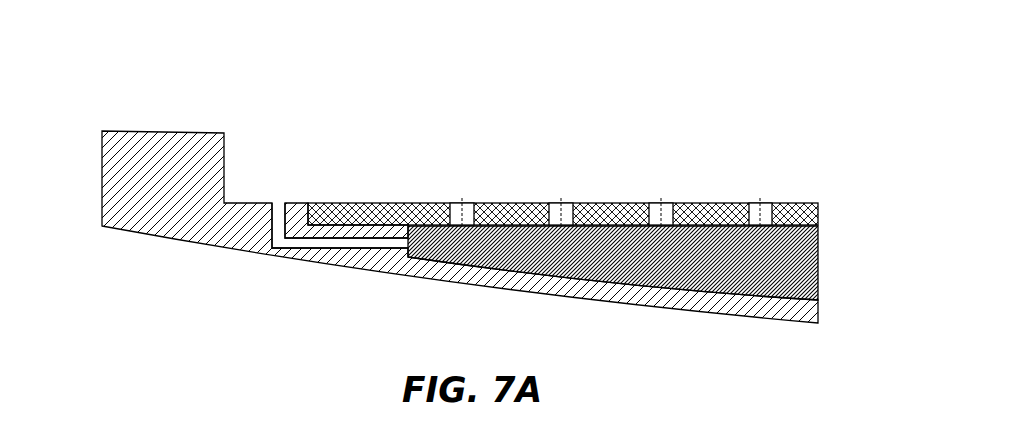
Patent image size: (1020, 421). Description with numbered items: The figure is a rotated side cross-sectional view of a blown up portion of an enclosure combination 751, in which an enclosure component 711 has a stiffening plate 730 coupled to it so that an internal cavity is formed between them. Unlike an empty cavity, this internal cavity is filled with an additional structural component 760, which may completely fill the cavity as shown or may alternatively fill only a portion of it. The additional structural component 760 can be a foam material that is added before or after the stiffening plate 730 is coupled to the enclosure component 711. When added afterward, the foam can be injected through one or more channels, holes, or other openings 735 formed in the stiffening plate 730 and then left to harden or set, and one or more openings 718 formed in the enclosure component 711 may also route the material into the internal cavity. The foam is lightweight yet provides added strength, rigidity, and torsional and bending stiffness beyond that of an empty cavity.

The enclosure combination 751 is at (195, 96).
The enclosure component 711 is at (137, 216).
The openings 718 is at (281, 238).
The stiffening plate 730 is at (608, 201).
The openings 735 is at (765, 207).
The additional structural component 760 is at (723, 273).